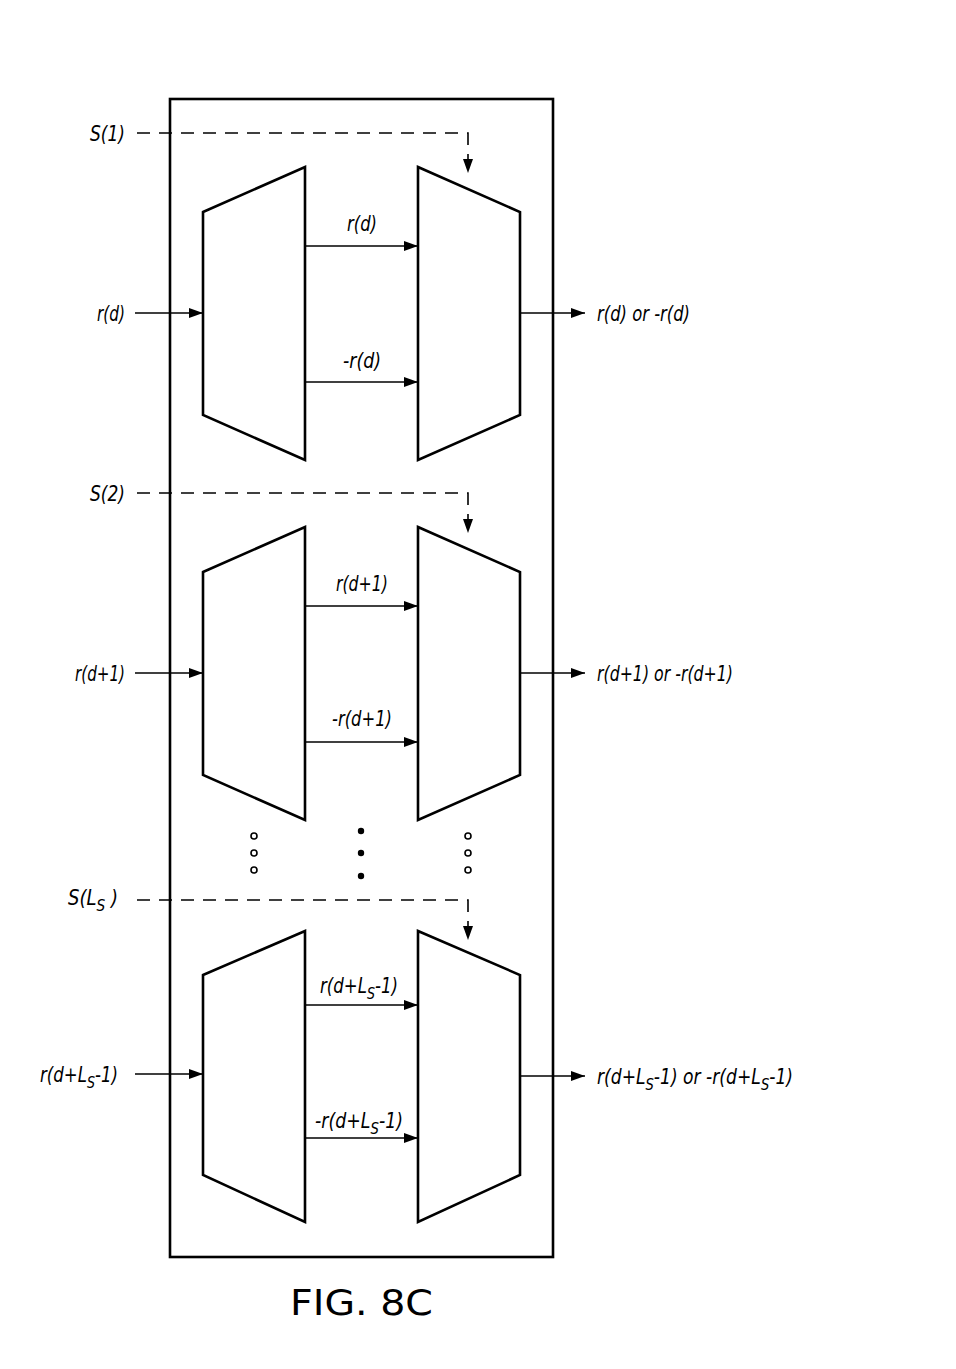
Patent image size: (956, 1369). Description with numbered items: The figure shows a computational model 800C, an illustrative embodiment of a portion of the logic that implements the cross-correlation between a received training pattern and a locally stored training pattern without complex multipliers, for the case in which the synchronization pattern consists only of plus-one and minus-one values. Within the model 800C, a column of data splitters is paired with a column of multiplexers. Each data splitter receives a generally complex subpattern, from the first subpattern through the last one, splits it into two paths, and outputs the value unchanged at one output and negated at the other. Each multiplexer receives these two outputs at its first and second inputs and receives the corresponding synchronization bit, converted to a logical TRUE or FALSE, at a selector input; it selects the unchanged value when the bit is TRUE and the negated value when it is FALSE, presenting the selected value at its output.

The sign flipping circuit 800C is at (583, 53).